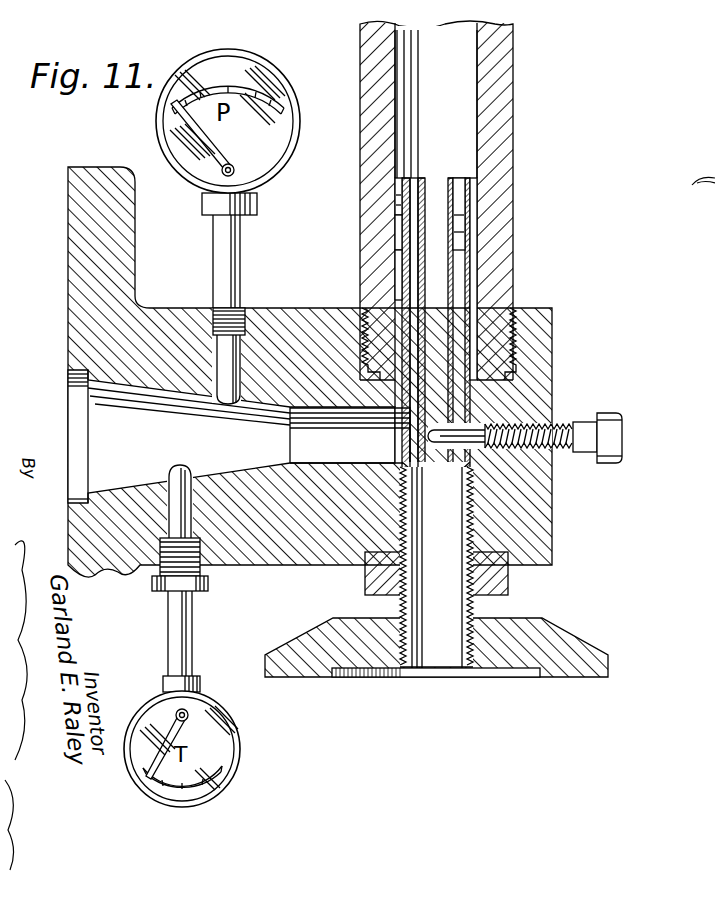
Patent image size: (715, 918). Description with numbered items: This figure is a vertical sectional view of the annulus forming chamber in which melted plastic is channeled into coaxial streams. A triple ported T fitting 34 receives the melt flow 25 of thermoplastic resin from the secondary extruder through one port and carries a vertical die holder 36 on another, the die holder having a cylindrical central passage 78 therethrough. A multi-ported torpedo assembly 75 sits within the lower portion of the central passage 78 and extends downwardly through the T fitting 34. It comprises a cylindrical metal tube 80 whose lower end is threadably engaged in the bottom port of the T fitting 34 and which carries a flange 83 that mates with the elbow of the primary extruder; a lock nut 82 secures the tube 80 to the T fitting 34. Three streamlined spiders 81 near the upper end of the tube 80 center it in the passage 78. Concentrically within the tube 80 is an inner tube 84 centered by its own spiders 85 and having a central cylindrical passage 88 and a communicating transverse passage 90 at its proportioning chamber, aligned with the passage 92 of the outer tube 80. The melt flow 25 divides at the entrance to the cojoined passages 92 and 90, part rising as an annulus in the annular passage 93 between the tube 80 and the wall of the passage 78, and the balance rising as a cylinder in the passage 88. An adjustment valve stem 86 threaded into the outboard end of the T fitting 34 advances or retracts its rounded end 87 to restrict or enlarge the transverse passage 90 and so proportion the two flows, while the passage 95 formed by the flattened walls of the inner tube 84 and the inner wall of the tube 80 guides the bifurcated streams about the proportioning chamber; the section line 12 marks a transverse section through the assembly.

The section line 12- 12 is at (420, 12).
The melt flow 25 is at (245, 460).
The T fitting 34 is at (552, 368).
The die holder 36 is at (513, 130).
The torpedo assembly 75 is at (474, 273).
The central passage 78 is at (455, 100).
The cylindrical metal tube 80 is at (402, 203).
The spiders 81 is at (398, 240).
The lock nut 82 is at (508, 580).
The flange 83 is at (590, 652).
The inner tube 84 is at (420, 185).
The spiders 85 is at (457, 228).
The adjustment valve stem 86 is at (622, 435).
The rounded end 87 is at (406, 488).
The central cylindrical passage 88 is at (433, 183).
The transverse passage 90 is at (405, 440).
The passage 92 is at (410, 435).
The annular passage 93 is at (400, 265).
The passage 95 is at (414, 287).